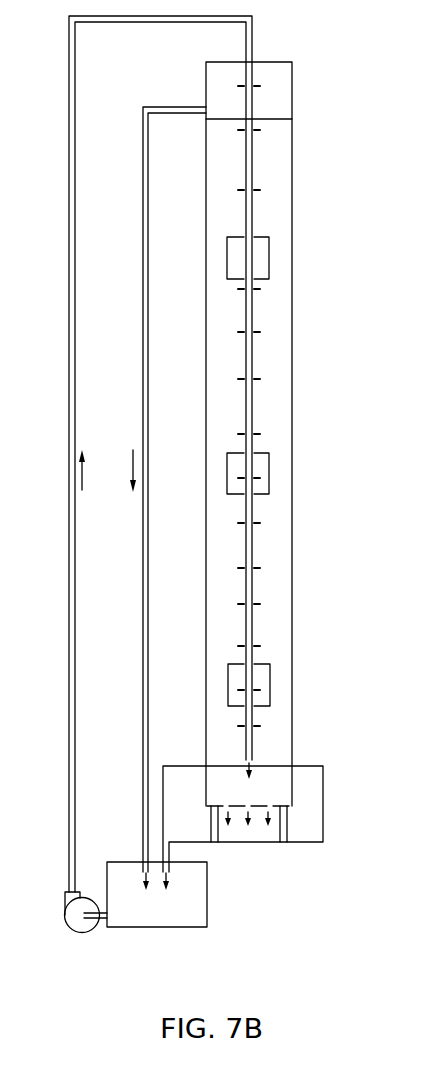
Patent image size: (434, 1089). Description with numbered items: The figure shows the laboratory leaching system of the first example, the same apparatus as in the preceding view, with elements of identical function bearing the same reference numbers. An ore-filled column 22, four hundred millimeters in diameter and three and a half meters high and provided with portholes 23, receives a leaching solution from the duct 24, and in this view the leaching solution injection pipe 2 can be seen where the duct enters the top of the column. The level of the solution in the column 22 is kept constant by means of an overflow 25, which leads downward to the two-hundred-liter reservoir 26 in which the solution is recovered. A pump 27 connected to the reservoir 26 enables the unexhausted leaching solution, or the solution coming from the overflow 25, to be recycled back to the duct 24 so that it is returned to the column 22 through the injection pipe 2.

The leaching solution injection pipe 2 is at (252, 119).
The ore-filled column 22 is at (293, 162).
The portholes 23 is at (256, 258).
The duct 24 is at (252, 32).
The overflow 25 is at (173, 107).
The reservoir 26 is at (197, 912).
The pump 27 is at (70, 917).